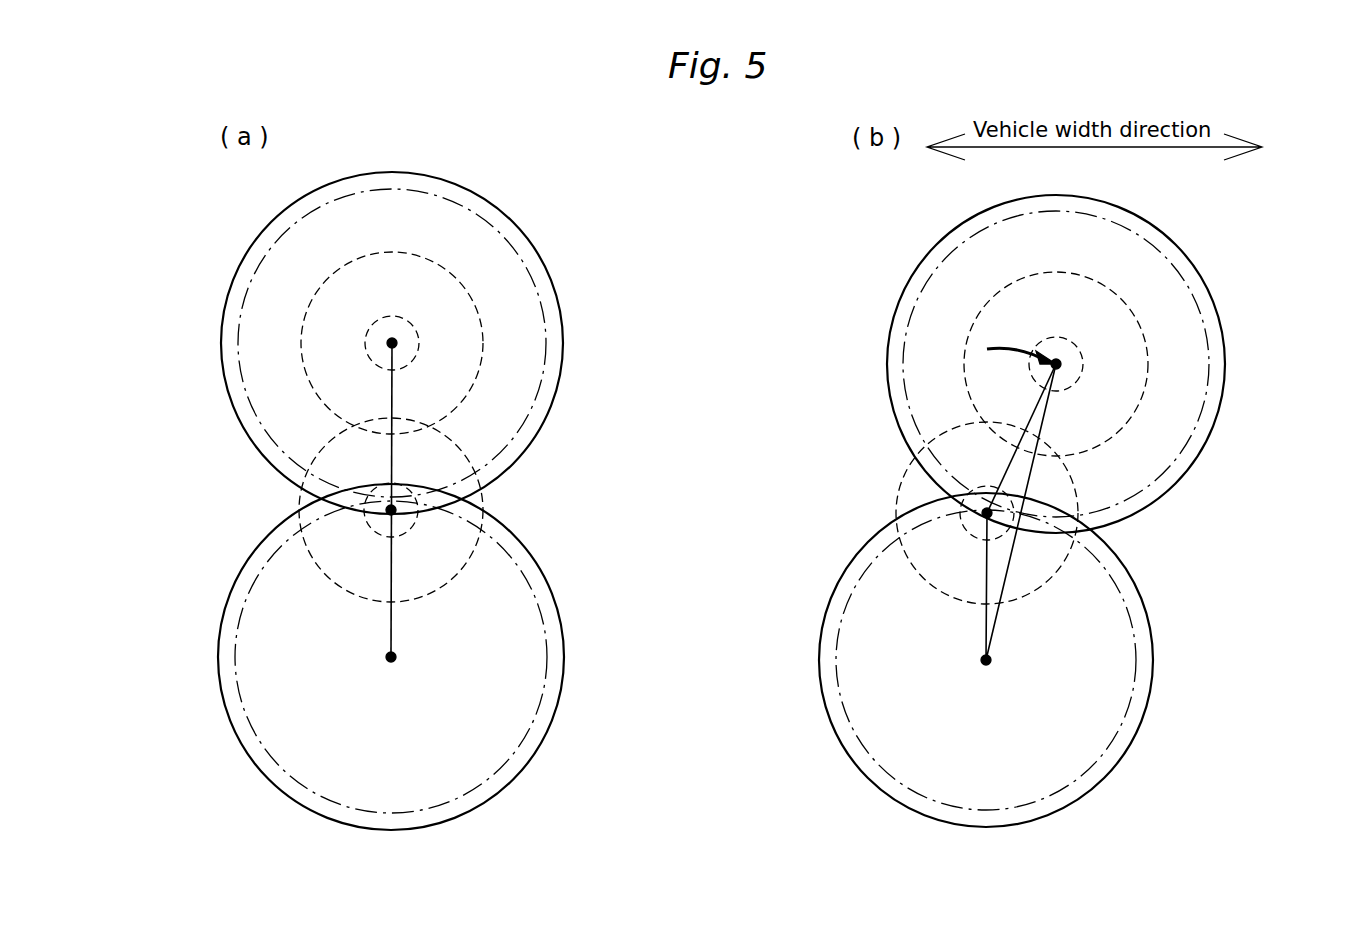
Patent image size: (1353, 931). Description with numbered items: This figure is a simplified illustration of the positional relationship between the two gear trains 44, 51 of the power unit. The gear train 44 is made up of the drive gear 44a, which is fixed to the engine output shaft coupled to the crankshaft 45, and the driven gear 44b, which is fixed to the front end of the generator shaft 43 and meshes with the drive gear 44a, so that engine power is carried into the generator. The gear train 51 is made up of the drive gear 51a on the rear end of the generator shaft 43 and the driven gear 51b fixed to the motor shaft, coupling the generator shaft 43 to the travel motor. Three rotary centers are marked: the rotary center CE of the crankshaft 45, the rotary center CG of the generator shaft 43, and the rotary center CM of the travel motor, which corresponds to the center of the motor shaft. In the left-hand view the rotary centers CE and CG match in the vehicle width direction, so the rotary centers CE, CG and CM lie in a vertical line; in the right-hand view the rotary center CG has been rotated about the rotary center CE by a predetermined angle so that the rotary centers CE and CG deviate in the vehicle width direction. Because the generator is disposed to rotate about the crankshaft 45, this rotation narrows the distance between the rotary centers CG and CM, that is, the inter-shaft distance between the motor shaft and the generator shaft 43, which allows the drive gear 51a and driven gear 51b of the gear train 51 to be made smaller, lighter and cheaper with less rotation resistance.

The generator shaft 43 is at (417, 360).
The gear train 44 is at (147, 318).
The drive gear 44a is at (307, 503).
The driven gear 44b is at (307, 316).
The crankshaft 45 is at (362, 518).
The gear train 51 is at (667, 548).
The drive gear 51a is at (540, 440).
The driven gear 51b is at (565, 656).
The rotary center CG is at (392, 344).
The rotary center CE is at (391, 510).
The rotary center CM is at (391, 657).